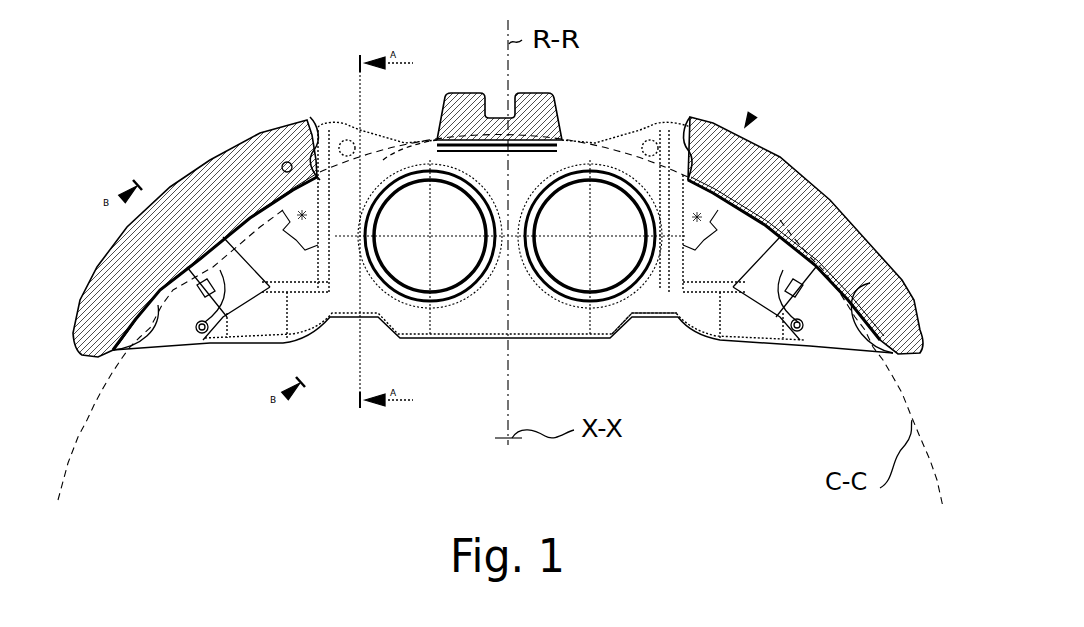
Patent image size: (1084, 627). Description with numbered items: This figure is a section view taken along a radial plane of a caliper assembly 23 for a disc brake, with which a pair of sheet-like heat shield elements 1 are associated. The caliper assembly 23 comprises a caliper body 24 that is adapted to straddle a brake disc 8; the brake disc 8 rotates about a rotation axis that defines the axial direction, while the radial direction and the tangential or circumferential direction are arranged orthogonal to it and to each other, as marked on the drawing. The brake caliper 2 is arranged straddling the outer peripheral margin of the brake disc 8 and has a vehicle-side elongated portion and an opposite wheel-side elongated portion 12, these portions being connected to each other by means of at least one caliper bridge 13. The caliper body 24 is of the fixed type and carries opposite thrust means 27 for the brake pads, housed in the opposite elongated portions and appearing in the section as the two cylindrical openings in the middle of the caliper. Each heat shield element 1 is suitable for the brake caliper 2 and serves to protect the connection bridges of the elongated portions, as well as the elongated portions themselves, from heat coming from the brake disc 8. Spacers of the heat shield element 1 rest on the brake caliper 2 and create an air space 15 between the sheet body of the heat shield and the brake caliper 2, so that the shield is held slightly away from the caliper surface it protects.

The heat shield element 1 is at (206, 340).
The brake caliper 2 is at (618, 140).
The brake disc 8 is at (388, 136).
The wheel-side elongated portion 12 is at (678, 303).
The caliper bridge 13 is at (233, 188).
The air space 15 is at (150, 328).
The caliper assembly 23 is at (748, 122).
The caliper body 24 is at (540, 110).
The thrust means 27 is at (414, 300).